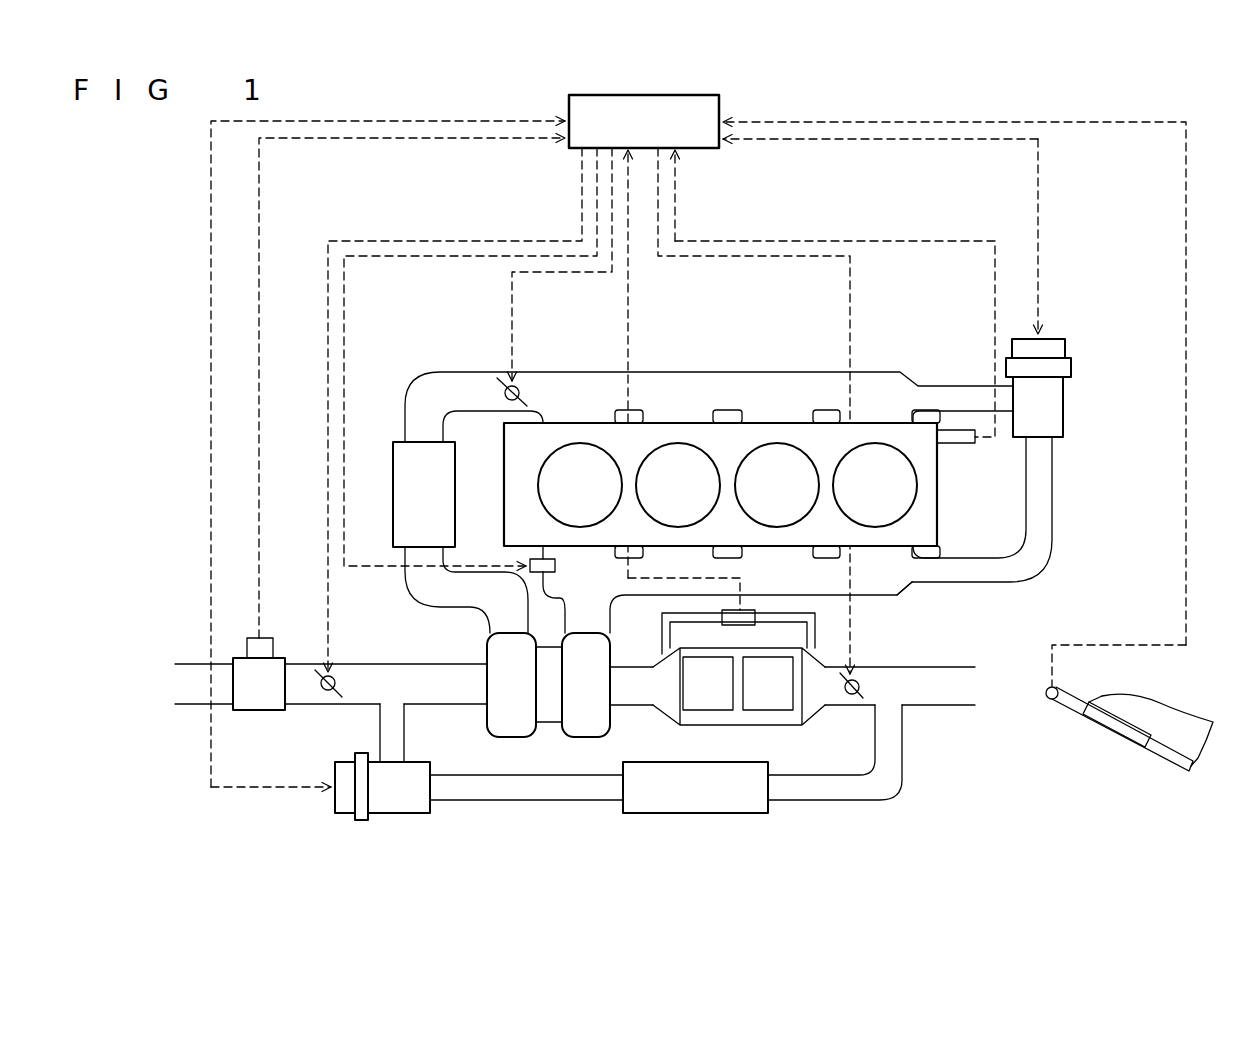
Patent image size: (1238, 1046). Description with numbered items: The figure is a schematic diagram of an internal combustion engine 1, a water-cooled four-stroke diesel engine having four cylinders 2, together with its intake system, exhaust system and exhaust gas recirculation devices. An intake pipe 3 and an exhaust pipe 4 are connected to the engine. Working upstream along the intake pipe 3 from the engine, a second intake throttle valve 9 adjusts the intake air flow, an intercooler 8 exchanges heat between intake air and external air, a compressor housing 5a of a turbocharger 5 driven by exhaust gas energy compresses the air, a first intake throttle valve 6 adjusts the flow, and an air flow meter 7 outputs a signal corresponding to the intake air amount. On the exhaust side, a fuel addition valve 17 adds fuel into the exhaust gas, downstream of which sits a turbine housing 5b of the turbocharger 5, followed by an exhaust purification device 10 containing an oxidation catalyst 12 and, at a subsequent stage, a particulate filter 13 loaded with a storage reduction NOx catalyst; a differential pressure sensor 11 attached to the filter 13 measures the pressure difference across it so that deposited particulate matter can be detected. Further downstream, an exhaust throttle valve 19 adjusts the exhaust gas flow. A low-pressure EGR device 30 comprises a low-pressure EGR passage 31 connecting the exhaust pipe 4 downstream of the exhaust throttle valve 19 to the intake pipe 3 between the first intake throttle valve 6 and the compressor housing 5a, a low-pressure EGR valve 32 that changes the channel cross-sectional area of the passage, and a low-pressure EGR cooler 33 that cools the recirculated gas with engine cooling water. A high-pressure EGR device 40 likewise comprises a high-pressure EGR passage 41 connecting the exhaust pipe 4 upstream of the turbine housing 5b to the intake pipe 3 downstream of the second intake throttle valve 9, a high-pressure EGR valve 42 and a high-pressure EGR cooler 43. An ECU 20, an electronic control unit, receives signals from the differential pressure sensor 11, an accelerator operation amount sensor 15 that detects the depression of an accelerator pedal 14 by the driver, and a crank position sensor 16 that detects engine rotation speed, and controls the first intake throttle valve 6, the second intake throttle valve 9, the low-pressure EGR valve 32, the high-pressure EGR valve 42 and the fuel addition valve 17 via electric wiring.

The internal combustion engine 1 is at (437, 362).
The cylinders 2 is at (592, 440).
The intake pipe 3 is at (552, 372).
The exhaust pipe 4 is at (640, 600).
The turbocharger 5 is at (509, 744).
The compressor housing 5a is at (500, 738).
The turbine housing 5b is at (585, 738).
The first intake throttle valve 6 is at (320, 690).
The air flow meter 7 is at (273, 650).
The intercooler 8 is at (393, 490).
The second intake throttle valve 9 is at (509, 401).
The exhaust purification device 10 is at (741, 695).
The differential pressure sensor 11 is at (758, 615).
The oxidation catalyst 12 is at (712, 710).
The particulate filter 13 is at (778, 710).
The accelerator pedal 14 is at (1125, 747).
The accelerator operation amount sensor 15 is at (1047, 699).
The crank position sensor 16 is at (950, 444).
The fuel addition valve 17 is at (530, 563).
The exhaust throttle valve 19 is at (852, 696).
The ECU 20 is at (720, 103).
The low-pressure EGR device 30 is at (585, 801).
The low-pressure EGR passage 31 is at (810, 806).
The low-pressure EGR valve 32 is at (385, 815).
The low-pressure EGR cooler 33 is at (693, 813).
The high-pressure EGR device 40 is at (1026, 448).
The high-pressure EGR passage 41 is at (955, 583).
The high-pressure EGR valve 42 is at (1064, 385).
The high-pressure EGR cooler 43 is at (1054, 462).